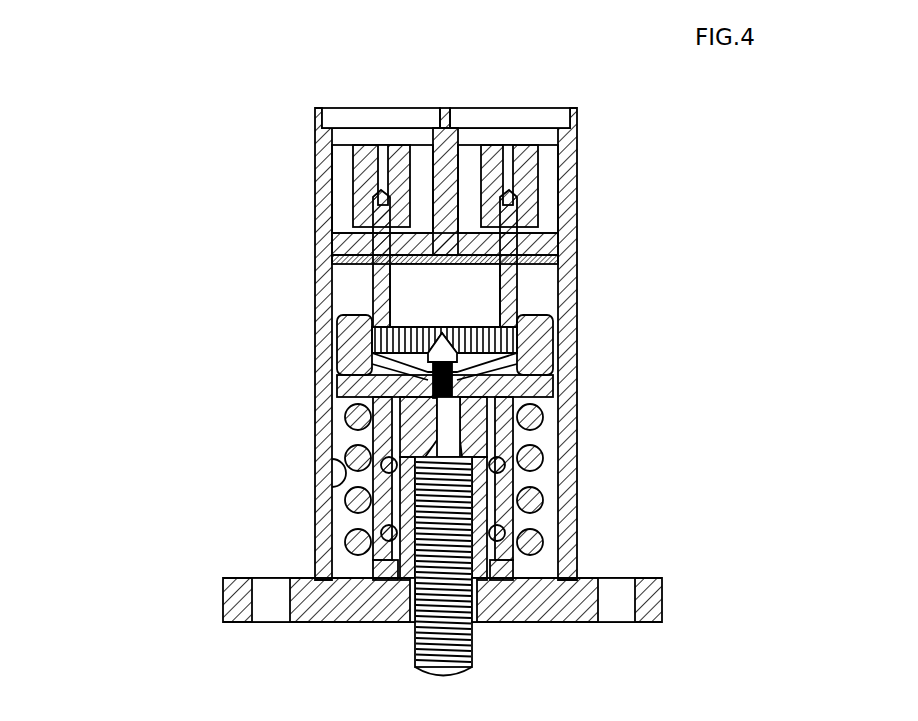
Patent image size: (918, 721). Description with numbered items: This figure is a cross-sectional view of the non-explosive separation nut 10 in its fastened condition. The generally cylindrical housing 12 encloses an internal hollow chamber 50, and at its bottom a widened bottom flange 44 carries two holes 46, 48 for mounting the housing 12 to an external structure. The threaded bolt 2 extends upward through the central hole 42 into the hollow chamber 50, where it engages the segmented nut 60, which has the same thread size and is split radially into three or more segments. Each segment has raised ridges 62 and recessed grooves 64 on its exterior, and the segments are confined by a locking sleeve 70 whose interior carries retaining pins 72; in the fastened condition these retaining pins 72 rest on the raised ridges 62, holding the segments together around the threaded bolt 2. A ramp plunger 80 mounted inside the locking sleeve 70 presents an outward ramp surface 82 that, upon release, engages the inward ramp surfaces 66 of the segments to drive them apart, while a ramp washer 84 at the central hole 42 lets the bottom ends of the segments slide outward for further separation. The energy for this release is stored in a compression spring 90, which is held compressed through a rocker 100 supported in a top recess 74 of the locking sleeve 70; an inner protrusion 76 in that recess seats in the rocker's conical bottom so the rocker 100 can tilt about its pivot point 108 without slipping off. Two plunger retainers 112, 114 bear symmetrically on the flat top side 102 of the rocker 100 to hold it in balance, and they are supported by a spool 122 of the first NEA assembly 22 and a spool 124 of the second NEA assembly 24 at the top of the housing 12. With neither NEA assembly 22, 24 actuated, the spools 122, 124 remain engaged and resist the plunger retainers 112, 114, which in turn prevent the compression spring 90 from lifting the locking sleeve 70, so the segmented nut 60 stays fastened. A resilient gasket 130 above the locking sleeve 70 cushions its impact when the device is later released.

The non-explosive separation nut 10 is at (130, 49).
The housing 12 is at (572, 318).
The NEA assembly 22 is at (368, 91).
The NEA assembly 24 is at (532, 92).
The central hole 42 is at (415, 600).
The threaded bolt 2 is at (470, 664).
The bottom flange 44 is at (520, 622).
The hole 46 is at (258, 600).
The hole 48 is at (632, 598).
The hollow chamber 50 is at (320, 490).
The segmented nut 60 is at (555, 520).
The raised ridges 62 is at (480, 440).
The recessed grooves 64 is at (495, 480).
The inward ramp surfaces 66 is at (505, 412).
The locking sleeve 70 is at (345, 355).
The retaining pins 72 is at (355, 417).
The top recess 74 is at (345, 335).
The inner protrusion 76 is at (375, 345).
The ramp plunger 80 is at (345, 385).
The outward ramp surface 82 is at (355, 450).
The ramp washer 84 is at (470, 600).
The compression spring 90 is at (345, 540).
The rocker 100 is at (520, 345).
The flat top side 102 is at (443, 324).
The pivot point 108 is at (455, 370).
The plunger retainer 112 is at (373, 282).
The plunger retainer 114 is at (517, 300).
The spool 122 is at (352, 160).
The spool 124 is at (520, 180).
The resilient gasket 130 is at (545, 265).